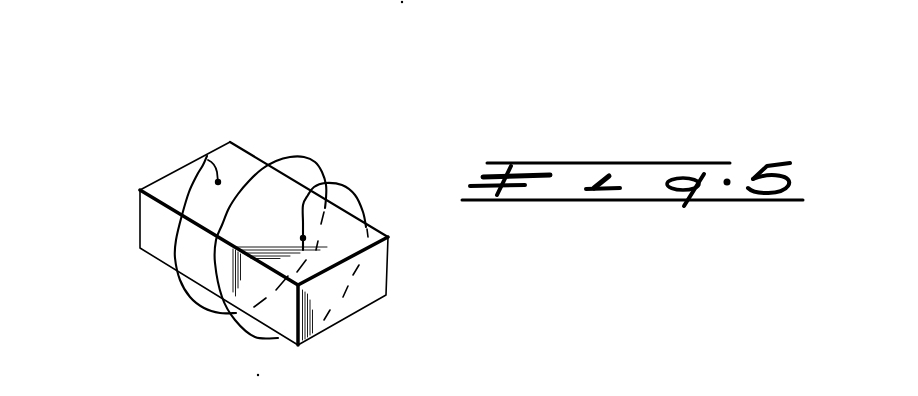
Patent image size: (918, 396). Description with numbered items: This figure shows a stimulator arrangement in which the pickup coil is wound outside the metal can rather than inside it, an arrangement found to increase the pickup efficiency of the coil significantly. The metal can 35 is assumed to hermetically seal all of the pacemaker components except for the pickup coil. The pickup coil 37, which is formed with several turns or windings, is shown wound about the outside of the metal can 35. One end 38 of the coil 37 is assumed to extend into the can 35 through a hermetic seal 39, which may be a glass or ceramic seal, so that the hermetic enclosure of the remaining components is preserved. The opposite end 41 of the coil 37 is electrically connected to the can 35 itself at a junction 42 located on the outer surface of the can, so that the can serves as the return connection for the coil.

The metal can 35 is at (141, 237).
The pickup coil 37 is at (289, 164).
The end of coil 38 is at (303, 238).
The hermetic seal 39 is at (306, 239).
The opposite end of coil 41 is at (207, 156).
The junction 42 is at (221, 179).